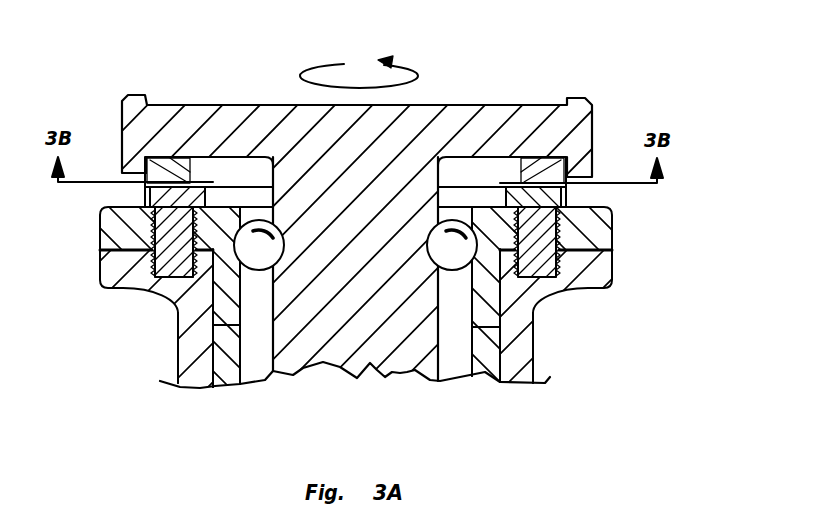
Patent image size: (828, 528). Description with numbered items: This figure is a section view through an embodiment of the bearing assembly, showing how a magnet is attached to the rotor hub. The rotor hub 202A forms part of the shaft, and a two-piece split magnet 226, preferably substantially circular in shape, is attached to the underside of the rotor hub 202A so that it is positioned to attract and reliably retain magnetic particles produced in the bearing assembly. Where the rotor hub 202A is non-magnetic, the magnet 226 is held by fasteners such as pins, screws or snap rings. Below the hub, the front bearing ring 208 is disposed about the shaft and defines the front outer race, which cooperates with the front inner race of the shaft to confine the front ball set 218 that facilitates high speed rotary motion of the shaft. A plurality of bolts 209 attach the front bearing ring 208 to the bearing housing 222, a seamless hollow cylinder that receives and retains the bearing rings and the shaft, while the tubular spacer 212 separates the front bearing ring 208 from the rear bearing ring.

The rotor hub 202A is at (477, 107).
The magnet 226 is at (568, 168).
The bolts 209 is at (160, 218).
The front bearing ring 208 is at (613, 232).
The bearing housing 222 is at (533, 352).
The tubular spacer 212 is at (483, 372).
The front ball set 218 is at (256, 280).